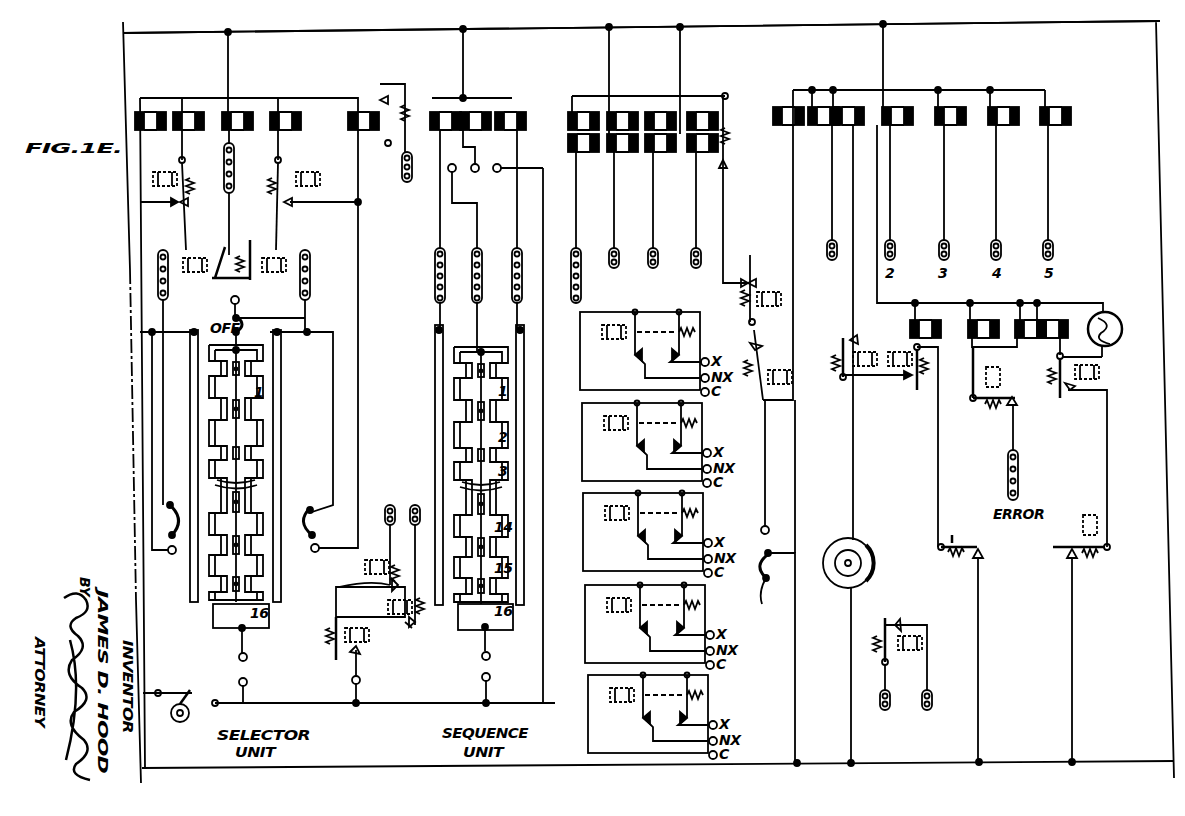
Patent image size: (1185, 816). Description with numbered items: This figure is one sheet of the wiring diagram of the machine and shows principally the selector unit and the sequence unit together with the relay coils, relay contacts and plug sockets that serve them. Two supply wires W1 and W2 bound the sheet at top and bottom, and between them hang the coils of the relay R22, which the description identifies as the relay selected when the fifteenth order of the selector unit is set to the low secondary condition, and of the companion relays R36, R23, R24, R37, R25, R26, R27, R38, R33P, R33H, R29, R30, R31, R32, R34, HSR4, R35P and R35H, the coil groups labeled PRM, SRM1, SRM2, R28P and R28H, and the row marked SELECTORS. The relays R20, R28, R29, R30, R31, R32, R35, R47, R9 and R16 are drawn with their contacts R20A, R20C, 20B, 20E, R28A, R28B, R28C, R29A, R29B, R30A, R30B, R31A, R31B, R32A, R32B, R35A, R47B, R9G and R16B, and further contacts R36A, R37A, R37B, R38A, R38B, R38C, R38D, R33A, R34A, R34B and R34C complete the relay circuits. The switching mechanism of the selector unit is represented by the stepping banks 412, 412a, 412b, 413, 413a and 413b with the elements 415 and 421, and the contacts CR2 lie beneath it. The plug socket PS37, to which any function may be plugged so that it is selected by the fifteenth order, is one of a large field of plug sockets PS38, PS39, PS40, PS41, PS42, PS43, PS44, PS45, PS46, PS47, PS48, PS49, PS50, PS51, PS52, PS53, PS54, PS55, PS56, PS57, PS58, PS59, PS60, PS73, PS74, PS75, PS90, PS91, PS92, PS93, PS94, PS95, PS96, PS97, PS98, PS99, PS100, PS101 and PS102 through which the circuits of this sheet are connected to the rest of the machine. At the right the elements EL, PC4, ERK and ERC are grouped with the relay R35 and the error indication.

The relay R36 coil R36 is at (147, 112).
The relay R22 is at (188, 112).
The relay R23 coil R23 is at (238, 112).
The relay R24 coil R24 is at (290, 112).
The relay R37 coil R37 is at (362, 112).
The relay R37 contact A R37A is at (386, 98).
The plug connector PS99 is at (405, 180).
The relay R38 coil R38 is at (785, 76).
The relay R38 contact C R38C is at (167, 206).
The relay R38 contact A R38A is at (166, 234).
The relay R38 contact D R38D is at (300, 196).
The relay R38 contact B R38B is at (294, 206).
The relay R20 contact A R20A is at (262, 250).
The plug connector PS38 is at (231, 167).
The conductor 20E is at (218, 224).
The relay 20B is at (203, 268).
The plug socket PS37 is at (158, 260).
The plug connector PS39 is at (310, 258).
The relay R20 is at (185, 272).
The switch contact PS97 is at (230, 320).
The switch contact PS98 is at (240, 302).
The switch contact PS96 is at (240, 330).
The stepping switch bank 412b is at (192, 378).
The stepping switch bank 413b is at (272, 348).
The stepping switch bank 412a is at (200, 600).
The stepping switch bank 413a is at (268, 598).
The stepping switch wiper 415 is at (225, 625).
The plug contact PS43 is at (265, 654).
The plug contact PS44 is at (265, 690).
The switch contact PS92 is at (165, 504).
The switch contact PS91 is at (168, 535).
The switch contact PS90 is at (170, 556).
The switch contact PS94 is at (332, 515).
The switch contact PS93 is at (337, 547).
The switch contact PS95 is at (312, 520).
The wiper 421 is at (240, 480).
The motor CR2 is at (200, 690).
The wire W2 is at (388, 770).
The wire W1 is at (520, 28).
The plug connector PS73 is at (390, 505).
The plug connector PS74 is at (430, 500).
The relay R47 is at (362, 566).
The relay R47 contact B R47B is at (351, 595).
The relay R9 is at (385, 606).
The relay R9 contact G R9G is at (409, 622).
The relay R20 contact C R20C is at (334, 674).
The plug contact PS75 is at (360, 680).
The stepping switch bank 412 is at (440, 378).
The stepping switch bank 413 is at (514, 604).
The plug contact PS45 is at (509, 654).
The plug contact PS46 is at (509, 687).
The relay R25 coil R25 is at (440, 112).
The relay R26 coil R26 is at (474, 112).
The relay R27 coil R27 is at (507, 112).
The switch contact PS48 is at (478, 172).
The switch contact PS47 is at (460, 185).
The switch contact PS49 is at (503, 165).
The plug connector PS40 is at (435, 268).
The plug connector PS41 is at (473, 256).
The plug connector PS42 is at (514, 256).
The program relay matrix PRM is at (570, 118).
The selector relay SRM1 is at (602, 112).
The selector relay SRM2 is at (652, 112).
The relay R28 hold coil R28H is at (697, 112).
The relay R28 pickup coil R28P is at (705, 152).
The relay R28 contact C R28C is at (726, 162).
The plug connector PS50 is at (578, 300).
The plug connector PS51 is at (618, 268).
The plug connector PS52 is at (656, 270).
The plug connector PS53 is at (691, 252).
The relay R28 is at (608, 340).
The relay R28 contact B R28B is at (636, 360).
The relay R28 contact A R28A is at (683, 332).
The relay R36 contact A R36A is at (752, 332).
The plug contact PS55 is at (719, 532).
The plug contact PS54 is at (677, 561).
The plug contact PS56 is at (705, 758).
The relay R29 is at (612, 432).
The relay R29 contact B R29B is at (638, 452).
The relay R29 contact A R29A is at (684, 445).
The relay R30 is at (613, 522).
The relay R30 contact B R30B is at (639, 542).
The relay R30 contact A R30A is at (685, 535).
The relay R31 is at (614, 614).
The relay R31 contact B R31B is at (640, 634).
The relay R31 contact A R31A is at (687, 627).
The relay R32 is at (617, 704).
The relay R32 contact B R32B is at (644, 724).
The relay R32 contact A R32A is at (690, 717).
The relay R37 contact B R37B is at (750, 268).
The switch contact PS102 is at (770, 526).
The switch contact PS101 is at (772, 548).
The switch contact PS100 is at (774, 596).
The selector relays SELECTORS is at (919, 65).
The relay R33 pickup coil R33P is at (820, 107).
The relay R33 hold coil R33H is at (850, 107).
The plug connector PS57 is at (832, 262).
The relay R34 is at (930, 302).
The relay HSR4 coil HSR4 is at (982, 320).
The relay R35 pickup coil R35P is at (1028, 320).
The relay R35 hold coil R35H is at (1052, 320).
The error lamp EL is at (1104, 334).
The relay R33 contact A R33A is at (844, 340).
The relay R34 contact A R34A is at (915, 400).
The relay R34 contact C R34C is at (990, 404).
The plug connector PS60 is at (1018, 490).
The relay R35 is at (1100, 372).
The relay R35 contact A R35A is at (1064, 402).
The error reset key ERK is at (957, 538).
The error reset contact ERC is at (986, 556).
The relay R34 contact B R34B is at (1066, 562).
The photocell PC4 is at (868, 546).
The relay R16 contact B R16B is at (888, 616).
The relay R16 is at (918, 650).
The plug connector PS58 is at (890, 712).
The plug connector PS59 is at (932, 712).